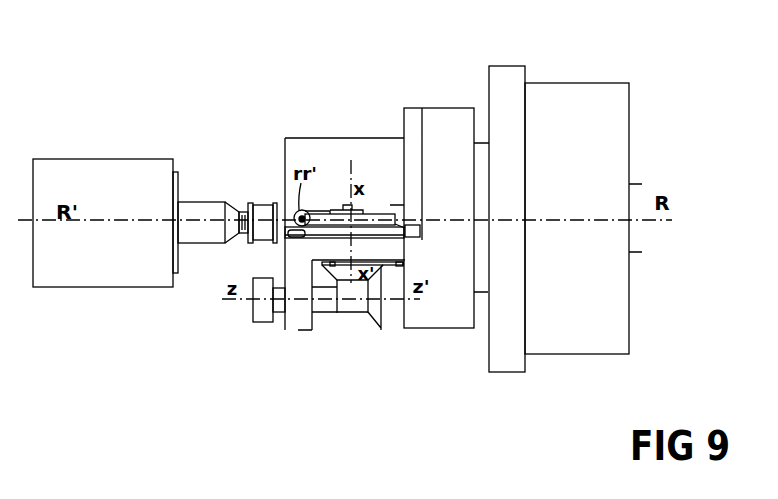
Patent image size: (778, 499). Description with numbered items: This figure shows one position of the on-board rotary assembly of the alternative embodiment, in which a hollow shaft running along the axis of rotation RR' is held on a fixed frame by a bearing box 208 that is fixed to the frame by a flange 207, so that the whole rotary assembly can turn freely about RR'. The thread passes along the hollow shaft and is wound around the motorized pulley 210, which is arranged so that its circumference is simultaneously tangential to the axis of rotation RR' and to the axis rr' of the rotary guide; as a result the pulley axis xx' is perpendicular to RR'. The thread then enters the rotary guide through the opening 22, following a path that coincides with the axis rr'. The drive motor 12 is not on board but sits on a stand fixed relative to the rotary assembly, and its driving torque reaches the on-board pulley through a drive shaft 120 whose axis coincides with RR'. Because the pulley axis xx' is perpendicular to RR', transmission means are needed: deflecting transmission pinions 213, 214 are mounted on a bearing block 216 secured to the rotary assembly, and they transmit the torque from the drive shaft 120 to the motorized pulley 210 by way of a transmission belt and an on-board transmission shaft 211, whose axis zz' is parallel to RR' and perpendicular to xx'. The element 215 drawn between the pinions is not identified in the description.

The drive motor 12 is at (115, 268).
The drive shaft 120 is at (245, 212).
The opening 22 is at (260, 212).
The motorized pulley 210 is at (380, 213).
The flange 207 is at (508, 80).
The bearing box 208 is at (582, 103).
The on-board transmission shaft 211 is at (260, 312).
The deflecting transmission pinion 213 is at (383, 313).
The deflecting transmission pinion 214 is at (337, 273).
The carriage 215 is at (323, 308).
The bearing block 216 is at (300, 325).